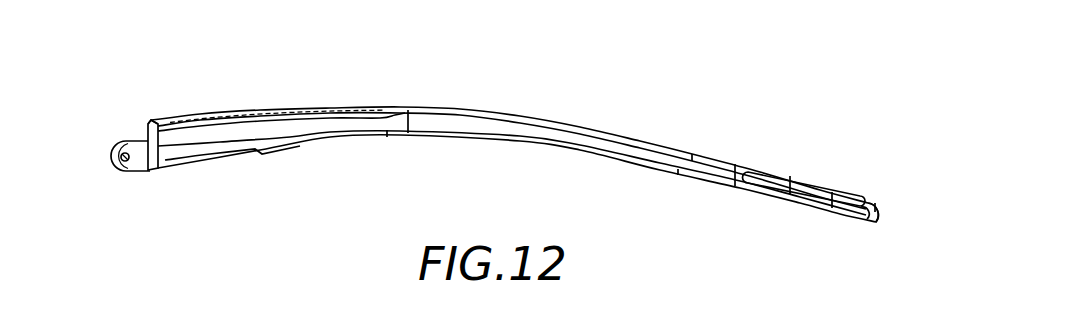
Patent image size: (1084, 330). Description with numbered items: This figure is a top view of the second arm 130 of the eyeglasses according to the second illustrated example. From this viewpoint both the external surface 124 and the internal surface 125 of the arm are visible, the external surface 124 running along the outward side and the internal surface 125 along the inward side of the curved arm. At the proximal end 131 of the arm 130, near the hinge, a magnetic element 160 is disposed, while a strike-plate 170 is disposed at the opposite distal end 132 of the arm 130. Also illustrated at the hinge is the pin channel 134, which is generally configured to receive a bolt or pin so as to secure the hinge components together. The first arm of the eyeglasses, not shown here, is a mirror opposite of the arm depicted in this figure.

The second arm 130 is at (517, 128).
The proximal end 131 is at (110, 115).
The distal end 132 is at (905, 208).
The external surface 124 is at (292, 108).
The internal surface 125 is at (355, 138).
The pin channel 134 is at (128, 163).
The magnetic element 160 is at (208, 162).
The strike-plate 170 is at (807, 190).